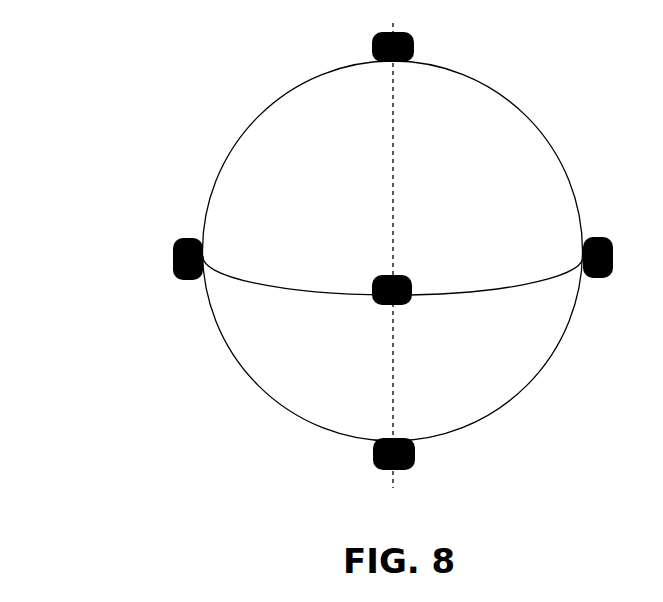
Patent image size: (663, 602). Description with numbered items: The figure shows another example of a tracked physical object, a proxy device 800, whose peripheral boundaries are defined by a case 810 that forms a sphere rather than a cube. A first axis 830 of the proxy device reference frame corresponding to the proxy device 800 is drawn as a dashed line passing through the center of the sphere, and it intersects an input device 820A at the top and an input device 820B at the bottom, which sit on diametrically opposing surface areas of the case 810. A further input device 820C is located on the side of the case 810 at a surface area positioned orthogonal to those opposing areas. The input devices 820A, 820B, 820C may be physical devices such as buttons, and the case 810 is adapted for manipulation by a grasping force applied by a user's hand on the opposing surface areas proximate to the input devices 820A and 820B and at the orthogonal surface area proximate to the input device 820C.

The proxy device 800 is at (131, 88).
The case 810 is at (218, 178).
The input device 820A is at (372, 47).
The input device 820B is at (371, 458).
The input device 820C is at (173, 262).
The first axis 830 is at (391, 168).